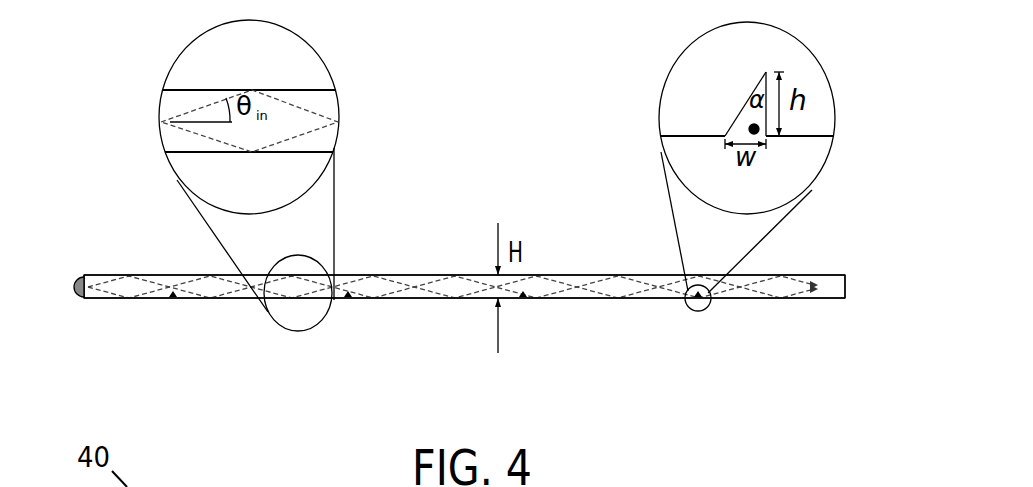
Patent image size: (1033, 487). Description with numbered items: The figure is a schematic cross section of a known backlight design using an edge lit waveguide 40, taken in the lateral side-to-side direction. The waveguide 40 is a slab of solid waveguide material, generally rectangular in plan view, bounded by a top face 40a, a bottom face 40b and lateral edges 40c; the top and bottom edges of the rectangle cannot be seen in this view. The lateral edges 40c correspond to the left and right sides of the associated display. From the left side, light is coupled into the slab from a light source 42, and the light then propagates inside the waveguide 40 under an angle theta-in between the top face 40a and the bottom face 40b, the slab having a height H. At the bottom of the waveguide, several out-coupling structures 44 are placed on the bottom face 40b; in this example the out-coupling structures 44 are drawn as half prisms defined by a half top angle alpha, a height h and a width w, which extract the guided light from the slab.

The edge lit waveguide 40 is at (138, 248).
The top face 40a is at (588, 272).
The bottom face 40b is at (441, 303).
The lateral edges 40c is at (92, 288).
The light source 42 is at (76, 299).
The out-coupling structures 44 is at (174, 298).